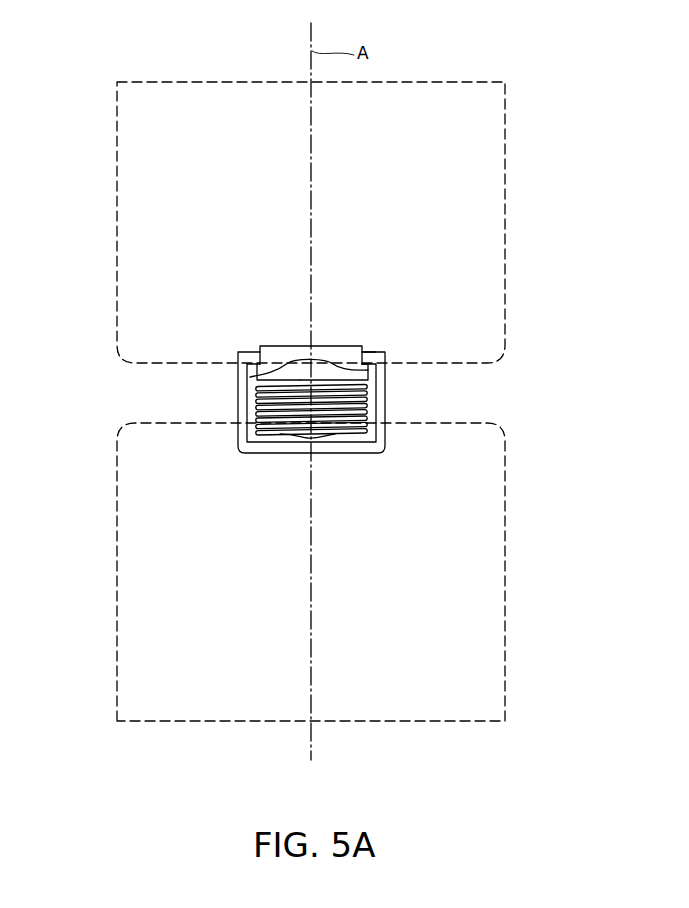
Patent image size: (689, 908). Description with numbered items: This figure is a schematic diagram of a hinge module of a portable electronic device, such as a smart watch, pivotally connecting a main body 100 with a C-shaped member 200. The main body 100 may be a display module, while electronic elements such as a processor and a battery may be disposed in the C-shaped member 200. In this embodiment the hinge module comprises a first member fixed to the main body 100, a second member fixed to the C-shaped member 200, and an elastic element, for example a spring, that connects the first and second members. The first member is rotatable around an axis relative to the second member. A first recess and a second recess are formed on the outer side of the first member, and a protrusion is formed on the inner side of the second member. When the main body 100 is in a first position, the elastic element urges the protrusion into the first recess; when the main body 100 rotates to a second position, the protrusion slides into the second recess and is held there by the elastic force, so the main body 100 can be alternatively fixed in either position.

The main body 100 is at (505, 172).
The C-shaped member 200 is at (505, 636).